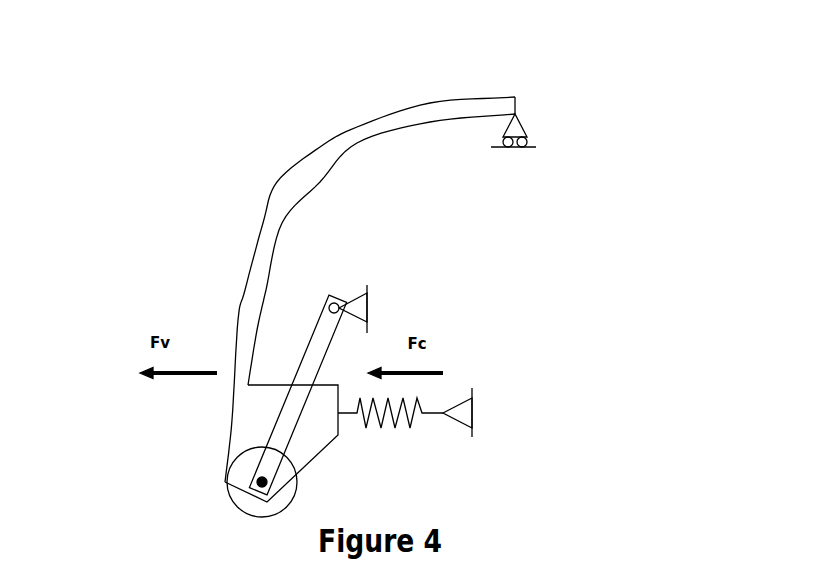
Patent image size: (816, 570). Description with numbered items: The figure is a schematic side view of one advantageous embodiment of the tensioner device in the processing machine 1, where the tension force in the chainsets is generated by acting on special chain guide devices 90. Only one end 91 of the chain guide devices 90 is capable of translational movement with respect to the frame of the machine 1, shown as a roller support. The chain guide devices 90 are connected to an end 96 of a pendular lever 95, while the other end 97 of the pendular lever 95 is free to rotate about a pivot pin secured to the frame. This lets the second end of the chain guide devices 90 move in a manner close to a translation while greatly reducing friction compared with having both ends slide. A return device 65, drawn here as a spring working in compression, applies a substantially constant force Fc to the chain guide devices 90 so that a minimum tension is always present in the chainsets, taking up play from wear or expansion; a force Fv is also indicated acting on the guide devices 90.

The chain guide devices 90 is at (277, 182).
The end 91 is at (522, 82).
The processing machine 1 is at (518, 157).
The other end of the pendular lever 97 is at (345, 285).
The pendular lever 95 is at (290, 348).
The end of the pendular lever 96 is at (237, 473).
The return device 65 is at (390, 440).